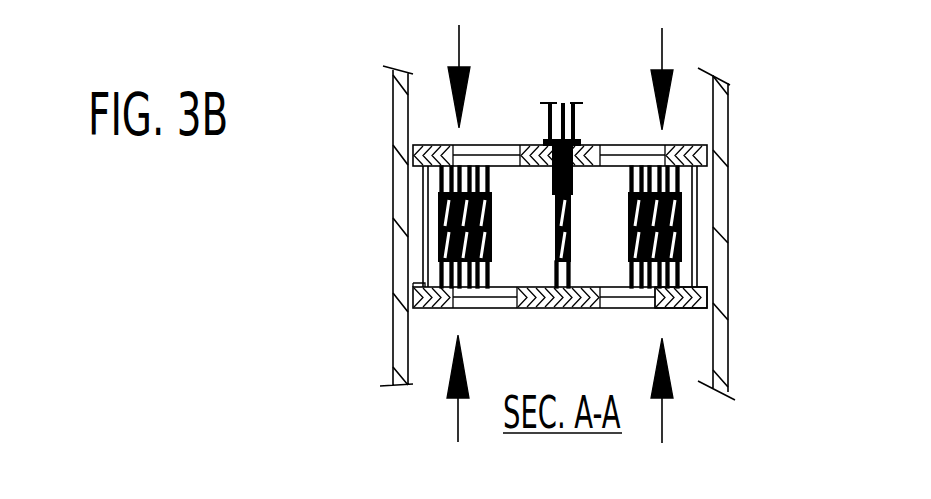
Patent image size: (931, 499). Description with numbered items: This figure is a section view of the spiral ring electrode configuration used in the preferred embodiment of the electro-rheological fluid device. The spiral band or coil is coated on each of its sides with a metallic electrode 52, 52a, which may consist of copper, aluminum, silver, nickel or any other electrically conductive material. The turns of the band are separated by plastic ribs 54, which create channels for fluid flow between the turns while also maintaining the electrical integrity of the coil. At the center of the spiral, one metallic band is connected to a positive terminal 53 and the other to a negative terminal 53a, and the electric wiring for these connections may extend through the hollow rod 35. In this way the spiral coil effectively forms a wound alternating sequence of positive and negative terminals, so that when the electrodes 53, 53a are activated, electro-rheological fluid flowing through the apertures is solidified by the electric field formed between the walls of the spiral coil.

The hollow rod 35 is at (553, 115).
The metallic electrode 52 is at (630, 247).
The metallic electrode 52a is at (657, 300).
The positive terminal 53 is at (548, 122).
The negative terminal 53a is at (577, 120).
The plastic ribs 54 is at (630, 185).